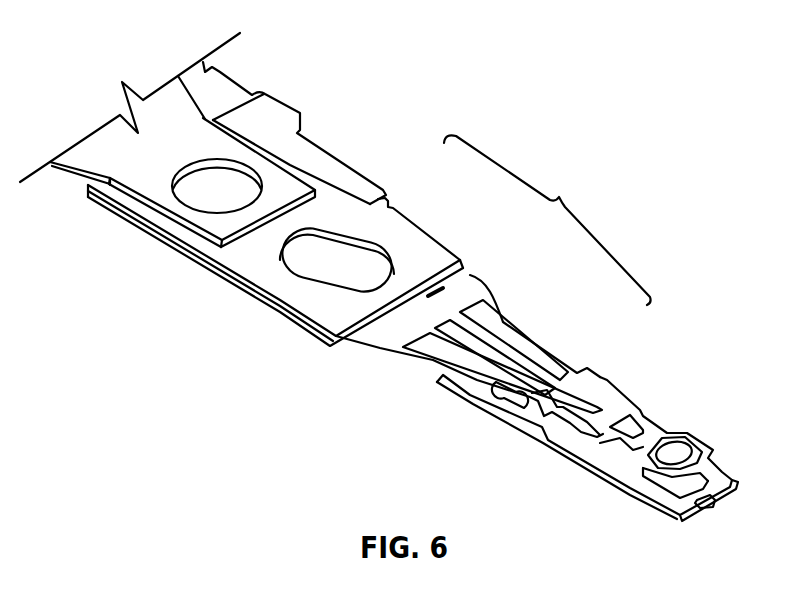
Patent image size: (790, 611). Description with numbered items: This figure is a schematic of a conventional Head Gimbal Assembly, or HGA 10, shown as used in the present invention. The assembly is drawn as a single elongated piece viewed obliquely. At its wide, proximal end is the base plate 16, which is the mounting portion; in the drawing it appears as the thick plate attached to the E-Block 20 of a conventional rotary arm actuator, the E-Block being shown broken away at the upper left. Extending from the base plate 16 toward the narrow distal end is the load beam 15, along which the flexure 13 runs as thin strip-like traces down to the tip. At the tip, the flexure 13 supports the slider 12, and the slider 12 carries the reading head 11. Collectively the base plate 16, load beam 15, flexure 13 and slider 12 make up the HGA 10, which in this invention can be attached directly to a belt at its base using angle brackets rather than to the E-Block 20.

The head gimbal assembly 10 is at (547, 220).
The reading head 11 is at (713, 507).
The slider 12 is at (683, 520).
The flexure 13 is at (563, 437).
The load beam 15 is at (514, 336).
The base plate 16 is at (400, 248).
The E-Block 20 is at (182, 113).